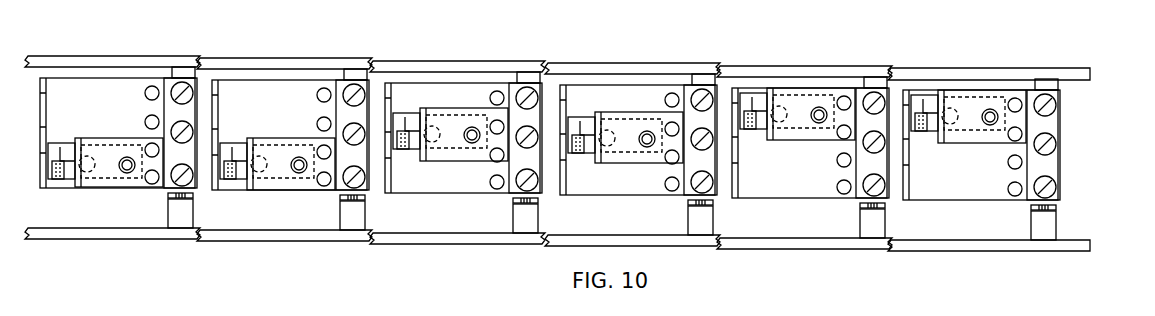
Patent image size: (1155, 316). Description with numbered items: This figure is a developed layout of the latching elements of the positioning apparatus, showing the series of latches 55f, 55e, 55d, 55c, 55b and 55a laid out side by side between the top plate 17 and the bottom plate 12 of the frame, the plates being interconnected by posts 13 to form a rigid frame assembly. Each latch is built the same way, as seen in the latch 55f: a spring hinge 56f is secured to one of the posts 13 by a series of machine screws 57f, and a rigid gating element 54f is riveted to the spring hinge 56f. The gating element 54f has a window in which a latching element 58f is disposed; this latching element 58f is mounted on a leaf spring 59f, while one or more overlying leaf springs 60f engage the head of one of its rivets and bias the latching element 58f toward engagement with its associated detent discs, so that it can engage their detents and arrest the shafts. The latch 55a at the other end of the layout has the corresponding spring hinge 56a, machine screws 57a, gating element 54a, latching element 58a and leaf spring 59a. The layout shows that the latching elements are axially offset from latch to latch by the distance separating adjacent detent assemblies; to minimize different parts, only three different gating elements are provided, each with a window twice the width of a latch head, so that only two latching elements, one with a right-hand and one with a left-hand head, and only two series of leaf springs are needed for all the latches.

The bottom plate 12 is at (1070, 246).
The posts 13 is at (1060, 222).
The top plate 17 is at (1090, 76).
The gating element 54a is at (947, 190).
The gating element 54f is at (130, 87).
The latch 55a is at (1017, 61).
The latch 55b is at (823, 56).
The latch 55c is at (658, 55).
The latch 55d is at (481, 51).
The latch 55e is at (298, 50).
The latch 55f is at (63, 48).
The spring hinge 56a is at (1053, 163).
The spring hinge 56f is at (192, 153).
The machine screws 57a is at (1056, 108).
The machine screws 57f is at (193, 130).
The latching element 58a is at (929, 104).
The latching element 58f is at (68, 163).
The leaf spring 59a is at (943, 89).
The leaf spring 59f is at (78, 140).
The leaf springs 60f is at (132, 138).